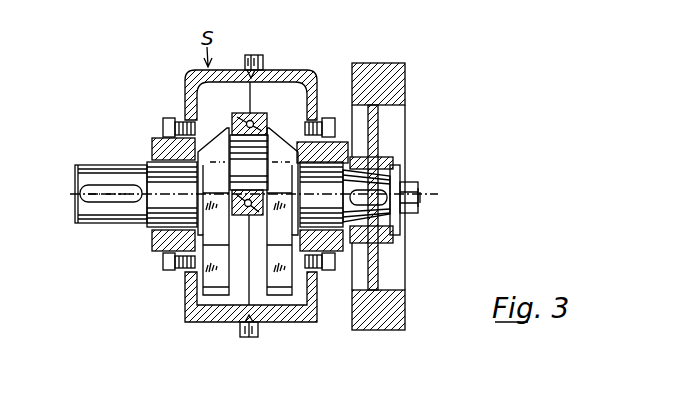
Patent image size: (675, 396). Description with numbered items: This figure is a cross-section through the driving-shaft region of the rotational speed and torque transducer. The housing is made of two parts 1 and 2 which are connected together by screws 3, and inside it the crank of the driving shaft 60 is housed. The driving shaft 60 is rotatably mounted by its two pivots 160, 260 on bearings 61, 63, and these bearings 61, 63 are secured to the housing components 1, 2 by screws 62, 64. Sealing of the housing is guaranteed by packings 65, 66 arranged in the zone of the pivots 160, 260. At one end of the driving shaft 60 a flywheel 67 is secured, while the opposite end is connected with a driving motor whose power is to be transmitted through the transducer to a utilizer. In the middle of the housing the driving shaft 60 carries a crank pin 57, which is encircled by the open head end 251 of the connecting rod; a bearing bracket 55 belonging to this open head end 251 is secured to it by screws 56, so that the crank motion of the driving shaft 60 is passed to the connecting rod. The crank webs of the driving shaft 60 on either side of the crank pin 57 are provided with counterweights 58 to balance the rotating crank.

The housing part 1 is at (192, 71).
The housing part 2 is at (290, 74).
The screws 3 is at (258, 55).
The bearing bracket 55 is at (252, 116).
The screws 56 is at (242, 117).
The crank pin 57 is at (270, 140).
The counterweights 58 is at (208, 288).
The driving shaft 60 is at (85, 164).
The bearing 61 is at (152, 146).
The screws 62 is at (163, 263).
The bearing 63 is at (345, 148).
The screws 64 is at (334, 264).
The packing 65 is at (150, 233).
The packing 66 is at (352, 246).
The flywheel 67 is at (400, 86).
The pivot 160 is at (155, 172).
The open head end 251 is at (245, 216).
The pivot 260 is at (401, 236).